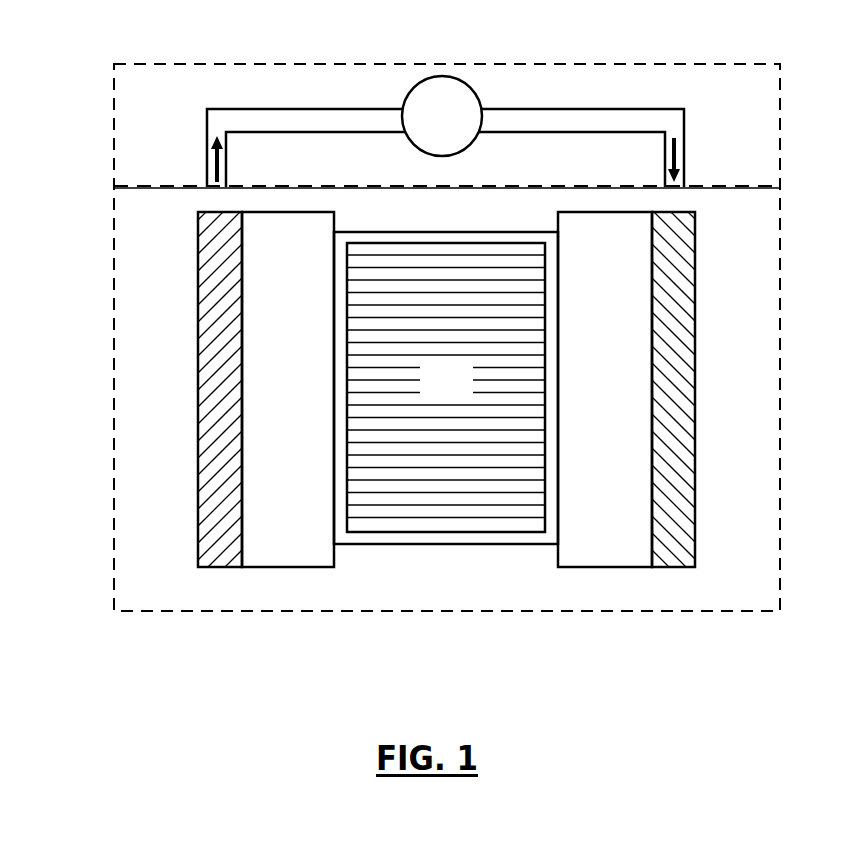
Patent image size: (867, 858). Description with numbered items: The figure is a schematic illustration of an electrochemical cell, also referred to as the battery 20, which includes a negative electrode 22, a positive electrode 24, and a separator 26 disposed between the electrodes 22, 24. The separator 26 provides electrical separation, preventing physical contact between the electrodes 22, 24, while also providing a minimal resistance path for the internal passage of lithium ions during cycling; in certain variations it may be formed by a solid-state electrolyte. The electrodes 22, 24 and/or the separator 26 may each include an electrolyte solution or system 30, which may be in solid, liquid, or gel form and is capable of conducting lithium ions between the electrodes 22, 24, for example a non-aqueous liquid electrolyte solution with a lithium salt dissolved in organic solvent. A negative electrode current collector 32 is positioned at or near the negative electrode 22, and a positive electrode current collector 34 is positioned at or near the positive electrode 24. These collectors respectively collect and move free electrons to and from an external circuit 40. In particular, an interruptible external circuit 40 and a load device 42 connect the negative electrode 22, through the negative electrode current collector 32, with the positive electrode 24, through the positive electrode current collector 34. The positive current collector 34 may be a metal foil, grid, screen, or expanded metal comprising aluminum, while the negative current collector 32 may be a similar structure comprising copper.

The electrochemical cell 20 is at (96, 286).
The negative electrode 22 is at (605, 389).
The positive electrode 24 is at (288, 389).
The separator 26 is at (480, 538).
The electrolyte solution or system 30 is at (446, 387).
The negative electrode current collector 32 is at (697, 267).
The positive electrode current collector 34 is at (197, 277).
The external circuit 40 is at (170, 62).
The load device 42 is at (445, 131).